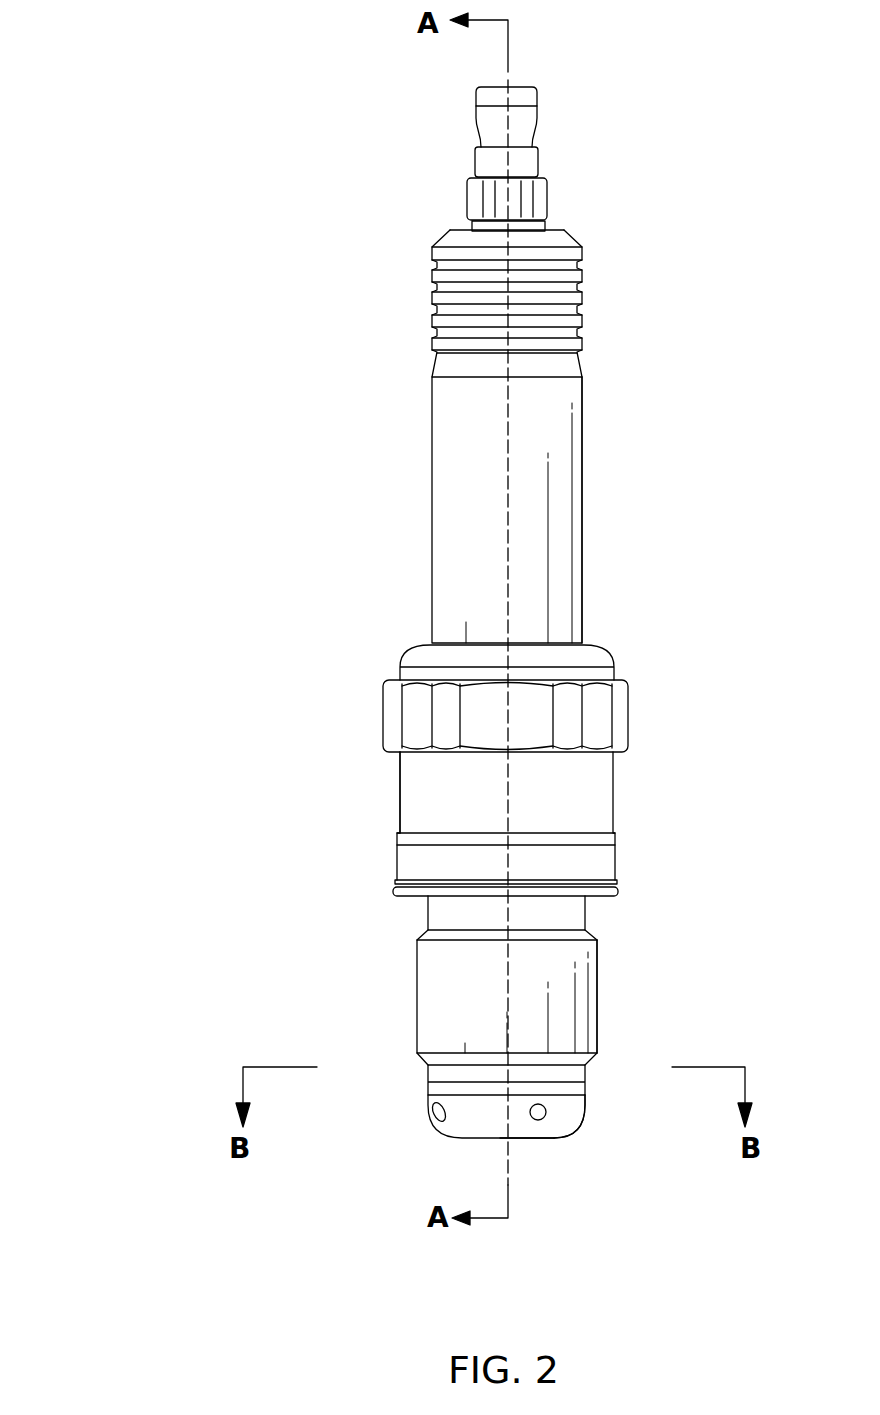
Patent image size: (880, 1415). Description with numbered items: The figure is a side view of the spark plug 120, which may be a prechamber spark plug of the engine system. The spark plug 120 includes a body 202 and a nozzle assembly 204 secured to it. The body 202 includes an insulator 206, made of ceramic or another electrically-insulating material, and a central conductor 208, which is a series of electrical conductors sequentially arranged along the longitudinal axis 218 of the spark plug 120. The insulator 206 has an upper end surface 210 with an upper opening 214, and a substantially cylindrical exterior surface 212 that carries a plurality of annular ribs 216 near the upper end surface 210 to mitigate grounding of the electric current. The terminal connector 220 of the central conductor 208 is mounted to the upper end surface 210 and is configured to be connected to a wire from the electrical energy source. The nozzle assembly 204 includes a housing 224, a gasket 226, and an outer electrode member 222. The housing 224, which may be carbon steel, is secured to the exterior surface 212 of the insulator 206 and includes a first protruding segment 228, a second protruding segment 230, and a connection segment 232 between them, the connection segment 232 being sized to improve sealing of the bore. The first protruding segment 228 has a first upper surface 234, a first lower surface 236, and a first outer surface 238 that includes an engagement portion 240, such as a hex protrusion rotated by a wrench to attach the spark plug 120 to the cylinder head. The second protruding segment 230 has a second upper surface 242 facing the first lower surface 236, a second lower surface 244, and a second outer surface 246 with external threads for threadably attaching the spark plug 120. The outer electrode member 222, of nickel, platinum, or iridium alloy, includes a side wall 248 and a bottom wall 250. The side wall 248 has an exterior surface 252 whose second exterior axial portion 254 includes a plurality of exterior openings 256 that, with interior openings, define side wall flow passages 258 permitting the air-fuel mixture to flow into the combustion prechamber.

The spark plug 120 is at (168, 50).
The body 202 is at (365, 525).
The nozzle assembly 204 is at (315, 883).
The insulator 206 is at (580, 521).
The central conductor 208 is at (455, 142).
The upper end surface 210 is at (563, 230).
The exterior surface 212 is at (583, 437).
The upper opening 214 is at (465, 229).
The annular ribs 216 is at (578, 302).
The longitudinal axis 218 is at (505, 424).
The terminal connector 220 is at (537, 110).
The outer electrode member 222 is at (570, 1111).
The housing 224 is at (428, 991).
The gasket 226 is at (618, 895).
The first protruding segment 228 is at (614, 790).
The second protruding segment 230 is at (585, 1012).
The connection segment 232 is at (429, 916).
The first upper surface 234 is at (588, 643).
The first lower surface 236 is at (396, 880).
The first outer surface 238 is at (400, 788).
The engagement portion 240 is at (624, 717).
The second upper surface 242 is at (590, 940).
The second lower surface 244 is at (428, 1082).
The second outer surface 246 is at (597, 976).
The side wall 248 is at (430, 1100).
The bottom wall 250 is at (533, 1140).
The exterior surface 252 is at (580, 1108).
The second exterior axial portion 254 is at (569, 1116).
The exterior openings 256 is at (530, 1115).
The side wall flow passages 258 is at (544, 1118).